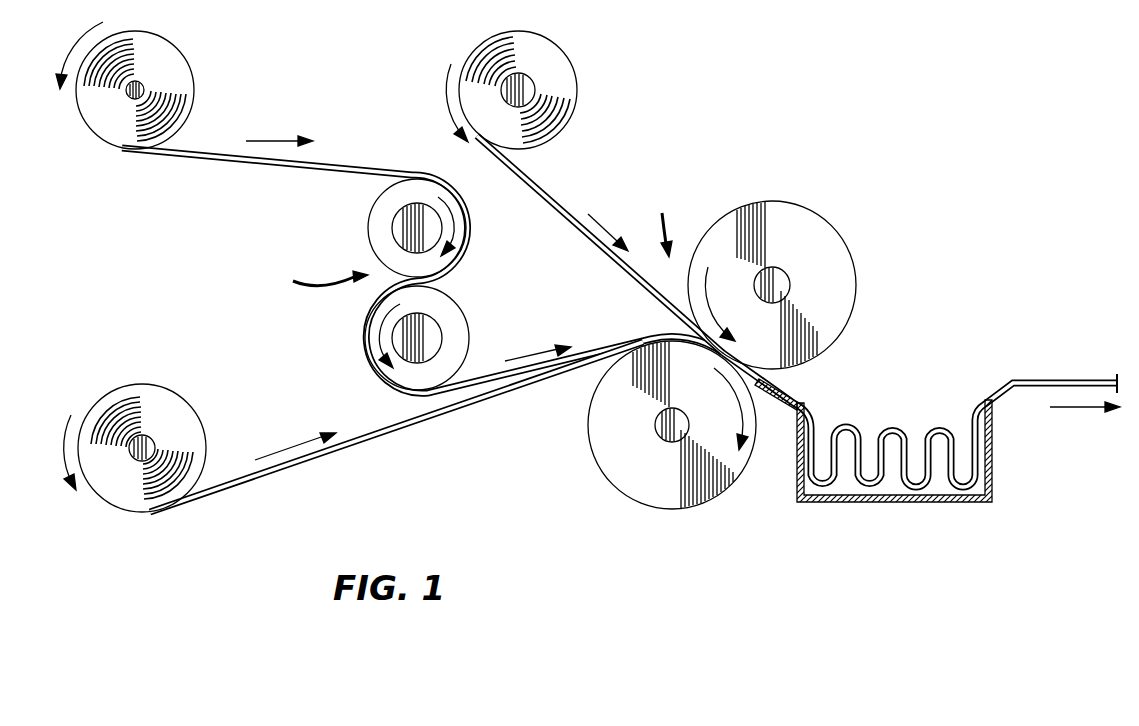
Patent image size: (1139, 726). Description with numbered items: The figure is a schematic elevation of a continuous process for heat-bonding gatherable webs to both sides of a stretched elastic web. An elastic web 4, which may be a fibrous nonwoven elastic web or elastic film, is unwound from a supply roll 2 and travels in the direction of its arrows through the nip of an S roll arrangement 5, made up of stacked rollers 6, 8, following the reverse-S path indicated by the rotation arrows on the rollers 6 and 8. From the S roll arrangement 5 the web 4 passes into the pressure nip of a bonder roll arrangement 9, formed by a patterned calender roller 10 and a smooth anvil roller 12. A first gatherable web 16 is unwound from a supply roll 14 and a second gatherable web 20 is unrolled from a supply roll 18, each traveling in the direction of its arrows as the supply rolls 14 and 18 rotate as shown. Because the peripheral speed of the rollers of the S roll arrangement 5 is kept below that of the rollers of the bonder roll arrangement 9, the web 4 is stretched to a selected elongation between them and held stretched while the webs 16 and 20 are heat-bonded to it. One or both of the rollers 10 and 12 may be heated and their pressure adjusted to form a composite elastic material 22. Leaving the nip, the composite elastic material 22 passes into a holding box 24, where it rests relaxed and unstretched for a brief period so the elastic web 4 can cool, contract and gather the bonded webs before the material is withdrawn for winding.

The supply roll 2 is at (186, 55).
The elastic web 4 is at (278, 168).
The S roll arrangement 5 is at (313, 283).
The stacked roller 6 is at (467, 232).
The stacked roller 8 is at (462, 325).
The bonder roll arrangement 9 is at (662, 226).
The patterned calender roller 10 is at (846, 270).
The smooth anvil roller 12 is at (650, 488).
The supply roll 14 is at (570, 62).
The first gatherable web 16 is at (562, 202).
The supply roll 18 is at (154, 448).
The second gatherable web 20 is at (388, 433).
The composite elastic material 22 is at (797, 399).
The holding box 24 is at (912, 502).